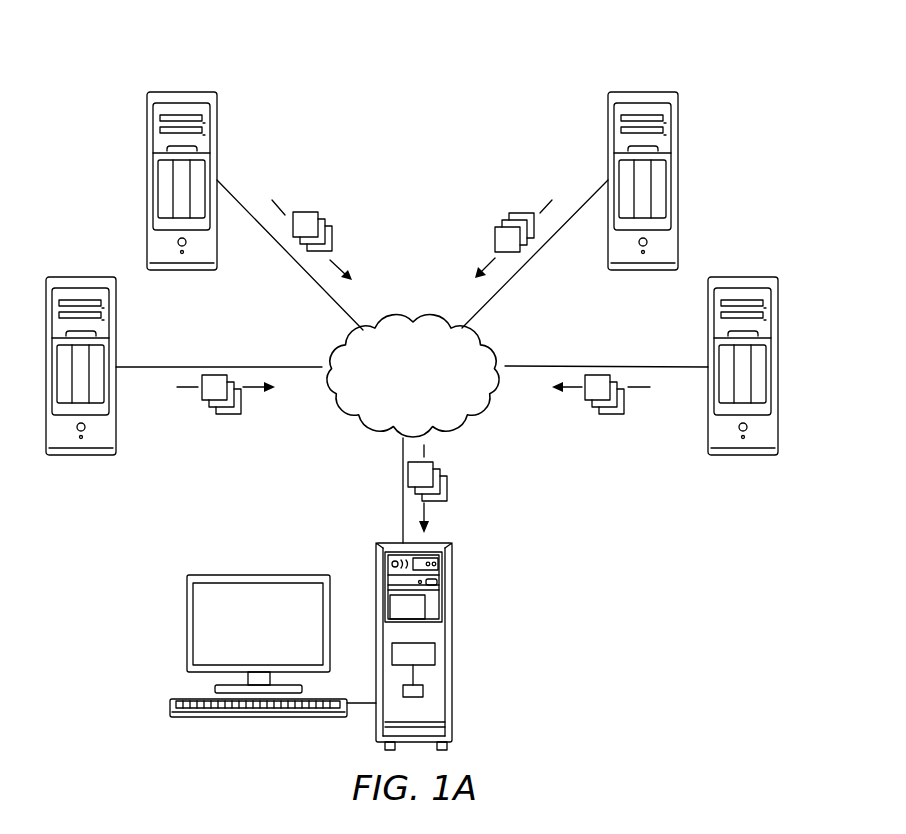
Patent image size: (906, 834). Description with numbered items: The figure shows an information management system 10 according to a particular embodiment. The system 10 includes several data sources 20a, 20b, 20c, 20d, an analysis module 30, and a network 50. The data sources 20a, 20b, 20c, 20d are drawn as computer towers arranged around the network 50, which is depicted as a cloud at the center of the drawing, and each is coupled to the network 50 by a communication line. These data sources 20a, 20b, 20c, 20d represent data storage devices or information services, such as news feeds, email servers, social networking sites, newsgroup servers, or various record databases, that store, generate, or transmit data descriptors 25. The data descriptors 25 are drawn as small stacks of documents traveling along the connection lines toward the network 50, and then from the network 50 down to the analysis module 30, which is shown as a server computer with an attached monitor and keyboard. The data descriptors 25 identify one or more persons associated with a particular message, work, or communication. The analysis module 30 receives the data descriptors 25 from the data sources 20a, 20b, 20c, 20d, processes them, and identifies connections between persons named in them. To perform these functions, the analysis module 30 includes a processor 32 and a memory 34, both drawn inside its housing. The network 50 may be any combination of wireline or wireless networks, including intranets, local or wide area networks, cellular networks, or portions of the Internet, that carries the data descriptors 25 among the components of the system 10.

The information management system 10 is at (746, 70).
The data source 20a is at (82, 277).
The data source 20b is at (182, 92).
The data source 20c is at (645, 92).
The data source 20d is at (745, 277).
The data descriptors 25 is at (227, 415).
The analysis module 30 is at (462, 593).
The processor 32 is at (423, 691).
The memory 34 is at (435, 655).
The network 50 is at (426, 390).